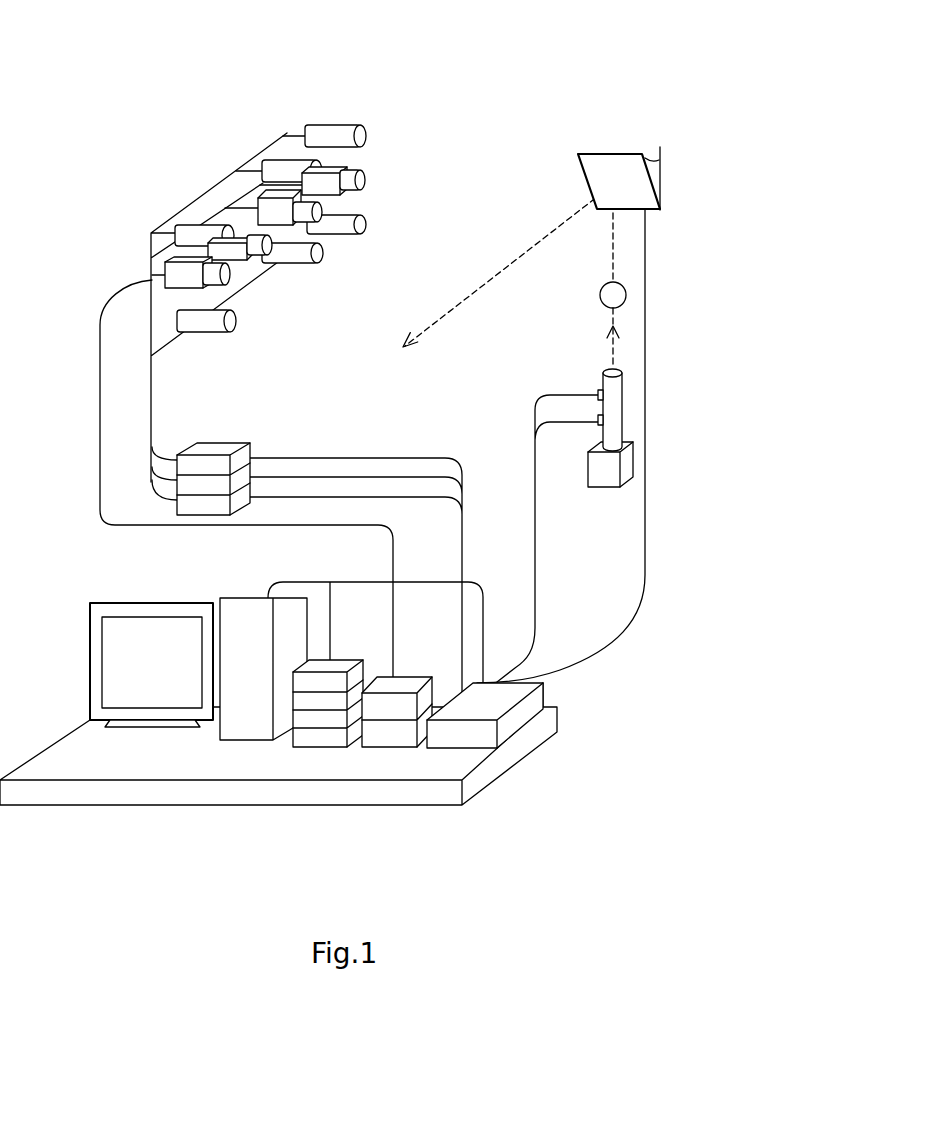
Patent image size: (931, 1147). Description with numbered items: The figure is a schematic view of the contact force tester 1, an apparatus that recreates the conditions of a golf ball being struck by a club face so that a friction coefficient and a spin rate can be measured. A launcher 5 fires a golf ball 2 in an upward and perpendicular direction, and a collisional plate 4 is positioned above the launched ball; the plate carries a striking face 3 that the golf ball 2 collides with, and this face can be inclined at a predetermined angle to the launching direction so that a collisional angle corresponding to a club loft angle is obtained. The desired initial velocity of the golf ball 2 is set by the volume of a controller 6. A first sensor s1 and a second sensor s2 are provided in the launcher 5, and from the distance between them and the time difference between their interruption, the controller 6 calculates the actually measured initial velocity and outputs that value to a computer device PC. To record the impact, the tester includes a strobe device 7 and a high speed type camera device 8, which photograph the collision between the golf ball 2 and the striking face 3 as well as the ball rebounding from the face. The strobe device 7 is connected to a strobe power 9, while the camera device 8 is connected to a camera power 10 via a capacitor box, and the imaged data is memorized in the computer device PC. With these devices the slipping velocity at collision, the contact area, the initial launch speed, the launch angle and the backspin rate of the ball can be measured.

The contact force tester 1 is at (471, 90).
The golf ball 2 is at (626, 295).
The striking face 3 is at (600, 173).
The collisional plate 4 is at (613, 151).
The launcher 5 is at (621, 410).
The controller 6 is at (535, 703).
The strobe device 7 is at (327, 131).
The high speed type camera device 8 is at (360, 179).
The strobe power 9 is at (212, 446).
The camera power 10 is at (387, 733).
The computer device PC is at (239, 597).
The first sensor s1 is at (598, 394).
The second sensor s2 is at (598, 421).